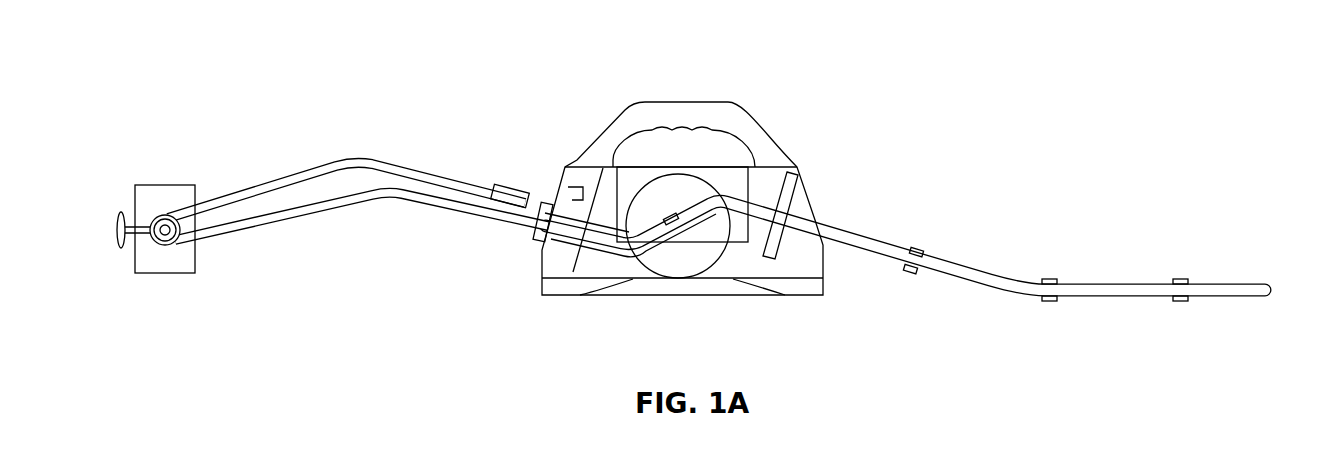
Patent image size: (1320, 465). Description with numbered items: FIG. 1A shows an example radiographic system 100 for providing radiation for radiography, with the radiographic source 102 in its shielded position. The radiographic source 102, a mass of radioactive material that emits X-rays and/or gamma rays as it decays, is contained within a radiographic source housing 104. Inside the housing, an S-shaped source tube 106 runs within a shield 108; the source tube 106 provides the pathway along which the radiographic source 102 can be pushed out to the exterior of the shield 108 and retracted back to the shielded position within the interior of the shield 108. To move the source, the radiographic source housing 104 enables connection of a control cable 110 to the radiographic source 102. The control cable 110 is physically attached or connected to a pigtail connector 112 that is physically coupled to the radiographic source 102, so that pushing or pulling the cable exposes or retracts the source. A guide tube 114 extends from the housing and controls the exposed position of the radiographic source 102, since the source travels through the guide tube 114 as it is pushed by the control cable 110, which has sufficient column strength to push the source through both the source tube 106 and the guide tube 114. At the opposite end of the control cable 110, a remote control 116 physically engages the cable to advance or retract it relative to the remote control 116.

The radiographic system 100 is at (262, 66).
The radiographic source 102 is at (678, 216).
The radiographic source housing 104 is at (577, 159).
The S-shaped source tube 106 is at (630, 263).
The shield 108 is at (671, 266).
The control cable 110 is at (265, 186).
The pigtail connector 112 is at (633, 258).
The guide tube 114 is at (1243, 282).
The remote control 116 is at (156, 163).